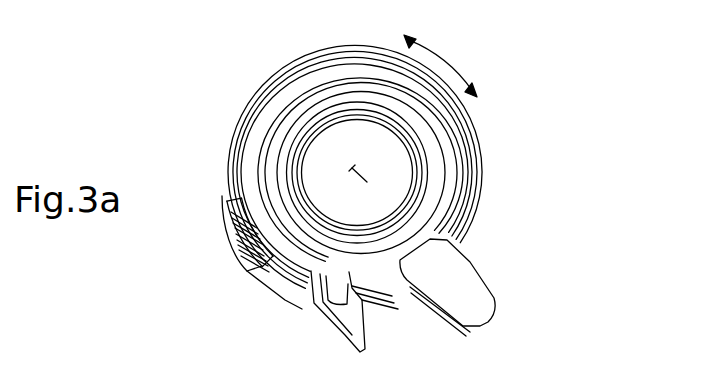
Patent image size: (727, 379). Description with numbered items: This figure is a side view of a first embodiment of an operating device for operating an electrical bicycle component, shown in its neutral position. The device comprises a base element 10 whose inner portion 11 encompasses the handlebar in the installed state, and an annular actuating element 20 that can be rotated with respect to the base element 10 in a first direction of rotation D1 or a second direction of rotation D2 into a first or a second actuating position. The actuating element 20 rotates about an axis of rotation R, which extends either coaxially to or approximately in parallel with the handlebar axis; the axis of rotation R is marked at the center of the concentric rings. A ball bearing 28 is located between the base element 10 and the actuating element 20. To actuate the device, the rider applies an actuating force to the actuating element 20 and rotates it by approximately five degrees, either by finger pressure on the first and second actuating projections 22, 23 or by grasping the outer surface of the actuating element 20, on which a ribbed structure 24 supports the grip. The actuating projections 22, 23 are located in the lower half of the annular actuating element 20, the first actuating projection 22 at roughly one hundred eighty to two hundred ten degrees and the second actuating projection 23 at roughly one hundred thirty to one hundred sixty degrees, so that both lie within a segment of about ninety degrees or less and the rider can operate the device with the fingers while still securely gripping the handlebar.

The base element 10 is at (305, 148).
The inner portion 11 is at (320, 135).
The actuating element 20 is at (455, 155).
The first actuating projection 22 is at (340, 302).
The second actuating projection 23 is at (452, 283).
The ribbed structure 24 is at (230, 243).
The ball bearing 28 is at (425, 197).
The first direction of rotation D1 is at (422, 52).
The second direction of rotation D2 is at (499, 113).
The axis of rotation R is at (366, 186).